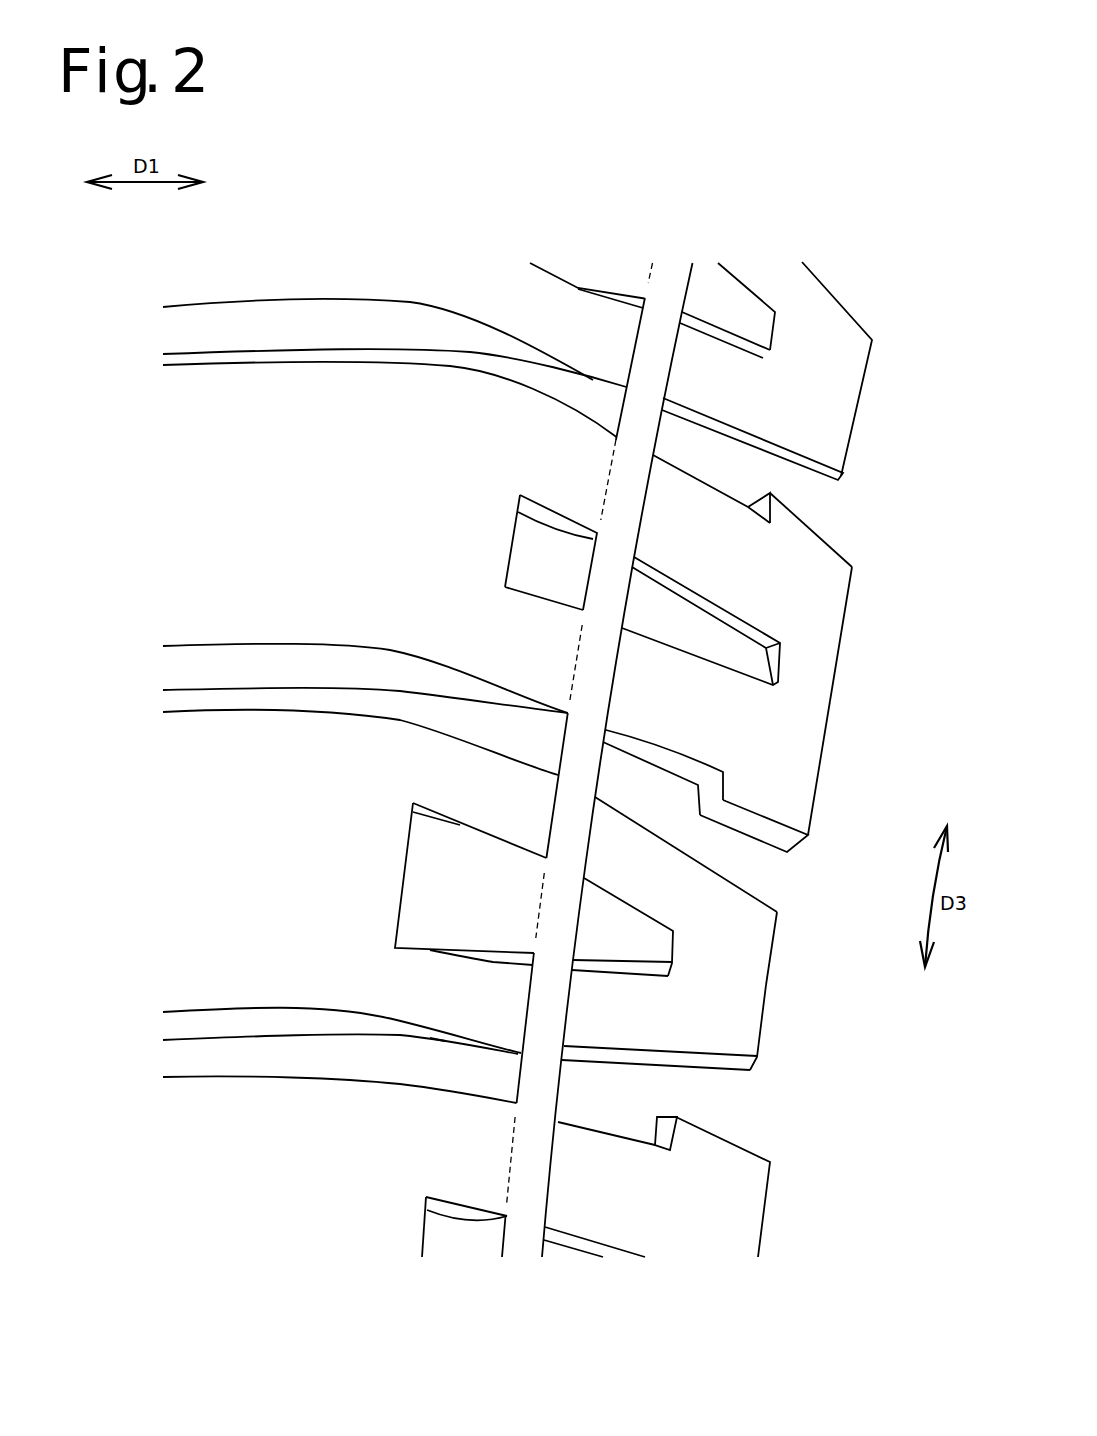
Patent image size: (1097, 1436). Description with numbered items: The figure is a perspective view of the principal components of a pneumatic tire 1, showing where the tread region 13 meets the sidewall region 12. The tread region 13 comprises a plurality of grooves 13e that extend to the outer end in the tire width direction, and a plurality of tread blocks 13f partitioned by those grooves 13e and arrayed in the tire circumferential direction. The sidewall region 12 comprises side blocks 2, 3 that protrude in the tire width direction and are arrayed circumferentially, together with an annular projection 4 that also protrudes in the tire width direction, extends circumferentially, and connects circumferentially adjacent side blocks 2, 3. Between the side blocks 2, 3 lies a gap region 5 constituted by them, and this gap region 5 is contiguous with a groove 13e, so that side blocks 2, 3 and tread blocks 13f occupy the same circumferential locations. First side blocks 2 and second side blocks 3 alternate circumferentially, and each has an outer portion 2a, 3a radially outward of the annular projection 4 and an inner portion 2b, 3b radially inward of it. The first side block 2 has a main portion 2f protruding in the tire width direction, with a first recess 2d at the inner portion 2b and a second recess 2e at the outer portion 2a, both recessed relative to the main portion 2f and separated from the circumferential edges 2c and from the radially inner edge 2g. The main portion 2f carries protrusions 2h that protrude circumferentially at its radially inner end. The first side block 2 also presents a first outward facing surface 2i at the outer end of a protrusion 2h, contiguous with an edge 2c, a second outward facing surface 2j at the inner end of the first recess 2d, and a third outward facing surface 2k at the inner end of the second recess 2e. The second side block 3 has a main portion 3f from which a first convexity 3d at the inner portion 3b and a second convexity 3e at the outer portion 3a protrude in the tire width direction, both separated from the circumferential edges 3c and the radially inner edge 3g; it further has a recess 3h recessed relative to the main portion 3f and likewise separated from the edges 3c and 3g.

The tire 1 is at (880, 116).
The first side block 2 is at (853, 680).
The outer portion 2a is at (543, 404).
The inner portion 2b is at (703, 477).
The edge 2c is at (670, 458).
The first recess 2d is at (692, 631).
The second recess 2e is at (558, 572).
The main portion 2f is at (812, 750).
The edge 2g is at (848, 652).
The protrusion 2h is at (850, 593).
The first outward facing surface 2i is at (752, 507).
The second outward facing surface 2j is at (765, 657).
The third outward facing surface 2k is at (580, 578).
The second side block 3 is at (870, 400).
The outer portion 3a is at (437, 1043).
The inner portion 3b is at (684, 1064).
The edge 3c is at (528, 757).
The first convexity 3d is at (655, 978).
The second convexity 3e is at (513, 964).
The main portion 3f is at (752, 1034).
The edge 3g is at (778, 952).
The recess 3h is at (442, 891).
The annular projection 4 is at (690, 281).
The gap region 5 is at (592, 406).
The sidewall region 12 is at (706, 238).
The tread region 13 is at (302, 220).
The groove 13e is at (362, 300).
The tread block 13f is at (190, 518).